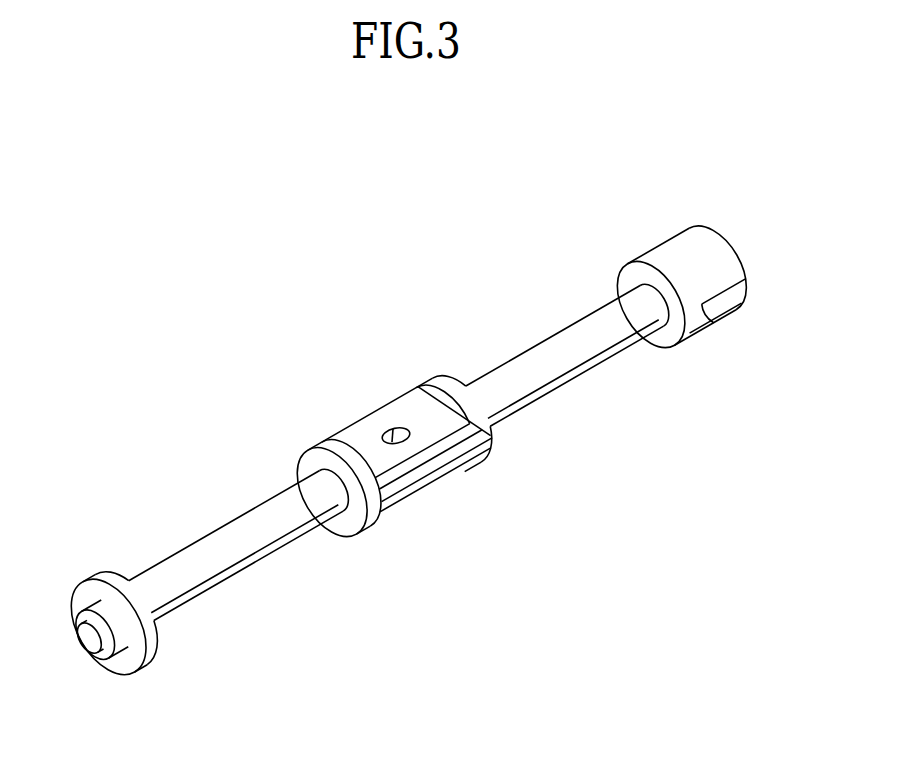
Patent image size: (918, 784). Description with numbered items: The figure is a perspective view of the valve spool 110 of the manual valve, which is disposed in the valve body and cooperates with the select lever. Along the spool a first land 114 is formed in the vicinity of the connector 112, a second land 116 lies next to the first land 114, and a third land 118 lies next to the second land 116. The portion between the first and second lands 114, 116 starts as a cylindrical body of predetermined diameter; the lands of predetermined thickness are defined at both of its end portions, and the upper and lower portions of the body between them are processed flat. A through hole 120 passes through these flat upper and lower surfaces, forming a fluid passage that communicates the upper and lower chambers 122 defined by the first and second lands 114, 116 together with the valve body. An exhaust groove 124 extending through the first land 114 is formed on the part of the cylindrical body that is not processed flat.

The valve spool 110 is at (402, 419).
The connector 112 is at (681, 263).
The first land 114 is at (459, 384).
The second land 116 is at (322, 472).
The third land 118 is at (113, 608).
The through hole 120 is at (400, 398).
The upper and lower chambers 122 is at (406, 434).
The exhaust groove 124 is at (433, 483).